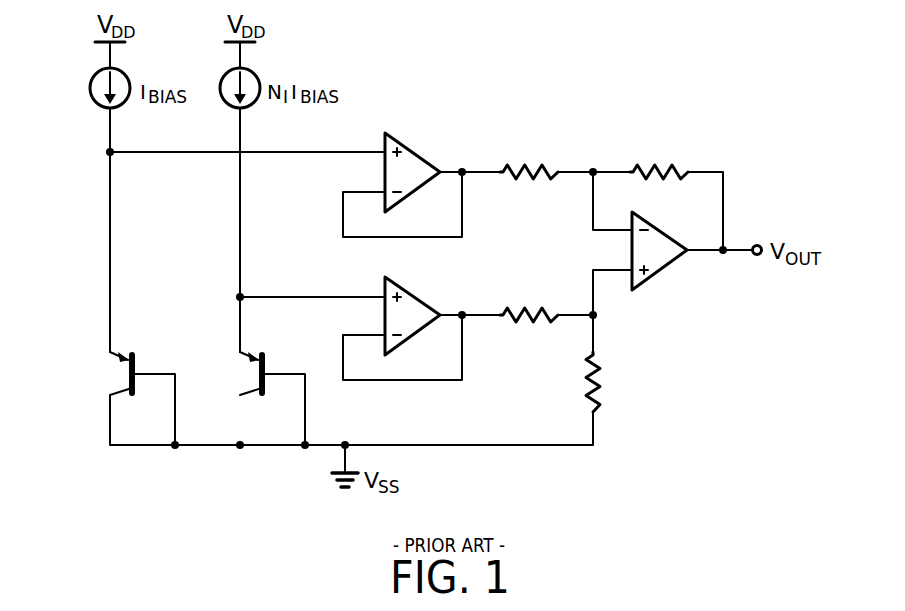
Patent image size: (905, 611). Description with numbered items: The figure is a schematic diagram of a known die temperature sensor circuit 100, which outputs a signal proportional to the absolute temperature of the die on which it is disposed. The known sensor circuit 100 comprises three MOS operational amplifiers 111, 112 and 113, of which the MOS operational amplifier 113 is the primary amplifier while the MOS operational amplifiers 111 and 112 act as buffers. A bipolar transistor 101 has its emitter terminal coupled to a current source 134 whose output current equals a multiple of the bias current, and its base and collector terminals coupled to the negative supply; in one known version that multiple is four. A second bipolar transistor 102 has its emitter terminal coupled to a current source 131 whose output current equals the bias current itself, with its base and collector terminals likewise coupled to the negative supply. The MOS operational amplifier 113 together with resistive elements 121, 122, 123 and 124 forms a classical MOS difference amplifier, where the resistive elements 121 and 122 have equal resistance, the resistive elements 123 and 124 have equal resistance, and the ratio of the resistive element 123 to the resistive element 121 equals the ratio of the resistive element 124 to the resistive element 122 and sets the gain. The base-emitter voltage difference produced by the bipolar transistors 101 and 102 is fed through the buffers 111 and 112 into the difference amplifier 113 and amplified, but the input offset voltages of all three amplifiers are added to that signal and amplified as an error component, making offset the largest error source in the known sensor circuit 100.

The known sensor circuit 100 is at (475, 498).
The bipolar transistor 101 is at (252, 398).
The bipolar transistor 102 is at (122, 398).
The MOS operational amplifier 111 is at (412, 159).
The MOS operational amplifier 112 is at (414, 304).
The MOS operational amplifier 113 is at (661, 239).
The resistive element 121 is at (529, 155).
The resistive element 122 is at (529, 298).
The resistive element 123 is at (659, 154).
The resistive element 124 is at (617, 377).
The current source 131 is at (92, 78).
The current source 134 is at (222, 78).